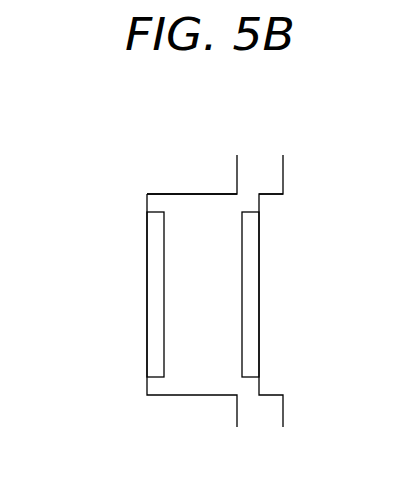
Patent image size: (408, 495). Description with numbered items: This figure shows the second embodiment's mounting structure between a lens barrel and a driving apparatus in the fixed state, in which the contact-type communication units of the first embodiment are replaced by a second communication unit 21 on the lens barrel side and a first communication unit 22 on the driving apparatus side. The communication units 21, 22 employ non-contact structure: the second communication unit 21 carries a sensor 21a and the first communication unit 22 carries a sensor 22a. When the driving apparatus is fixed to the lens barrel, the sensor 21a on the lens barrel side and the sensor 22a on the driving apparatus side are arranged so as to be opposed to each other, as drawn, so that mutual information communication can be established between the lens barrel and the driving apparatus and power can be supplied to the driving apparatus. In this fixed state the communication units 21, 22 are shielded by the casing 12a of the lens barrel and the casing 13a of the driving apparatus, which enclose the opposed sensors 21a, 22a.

The second communication unit 21 is at (155, 284).
The first communication unit 22 is at (238, 284).
The sensor 21a is at (147, 232).
The sensor 22a is at (242, 232).
The casing of the lens barrel 12a is at (167, 194).
The casing of the driving apparatus 13a is at (271, 194).